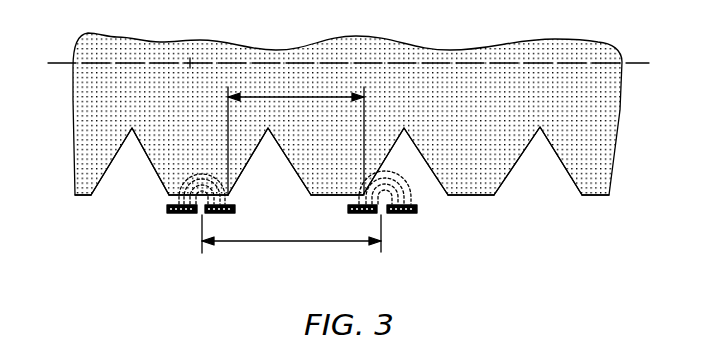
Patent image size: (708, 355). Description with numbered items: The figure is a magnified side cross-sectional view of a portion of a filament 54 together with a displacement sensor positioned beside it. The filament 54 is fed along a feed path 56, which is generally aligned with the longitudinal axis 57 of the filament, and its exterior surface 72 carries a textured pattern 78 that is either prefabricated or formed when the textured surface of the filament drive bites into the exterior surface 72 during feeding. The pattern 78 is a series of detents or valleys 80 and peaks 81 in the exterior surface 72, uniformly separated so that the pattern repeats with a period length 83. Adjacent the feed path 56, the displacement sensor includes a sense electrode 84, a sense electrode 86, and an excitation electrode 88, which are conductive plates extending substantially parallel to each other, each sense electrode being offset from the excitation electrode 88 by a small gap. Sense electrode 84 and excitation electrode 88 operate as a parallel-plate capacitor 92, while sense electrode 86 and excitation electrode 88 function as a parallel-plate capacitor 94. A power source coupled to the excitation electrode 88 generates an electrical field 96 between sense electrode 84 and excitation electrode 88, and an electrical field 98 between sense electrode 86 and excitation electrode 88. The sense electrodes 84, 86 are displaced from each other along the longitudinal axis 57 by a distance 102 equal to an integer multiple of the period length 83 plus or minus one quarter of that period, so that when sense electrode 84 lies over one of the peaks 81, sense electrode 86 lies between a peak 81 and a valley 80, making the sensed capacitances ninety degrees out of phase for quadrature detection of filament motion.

The filament 54 is at (92, 43).
The feed path 56 is at (635, 62).
The longitudinal axis 57 is at (190, 63).
The exterior surface 72 is at (599, 197).
The textured pattern 78 is at (597, 222).
The valley 80 is at (132, 130).
The peak 81 is at (82, 197).
The period length 83 is at (299, 96).
The sense electrode 84 is at (208, 214).
The sense electrode 86 is at (393, 214).
The excitation electrode 88 is at (169, 215).
The parallel-plate capacitor 92 is at (155, 214).
The parallel-plate capacitor 94 is at (449, 219).
The electrical field 96 is at (183, 165).
The electrical field 98 is at (426, 166).
The distance 102 is at (302, 244).